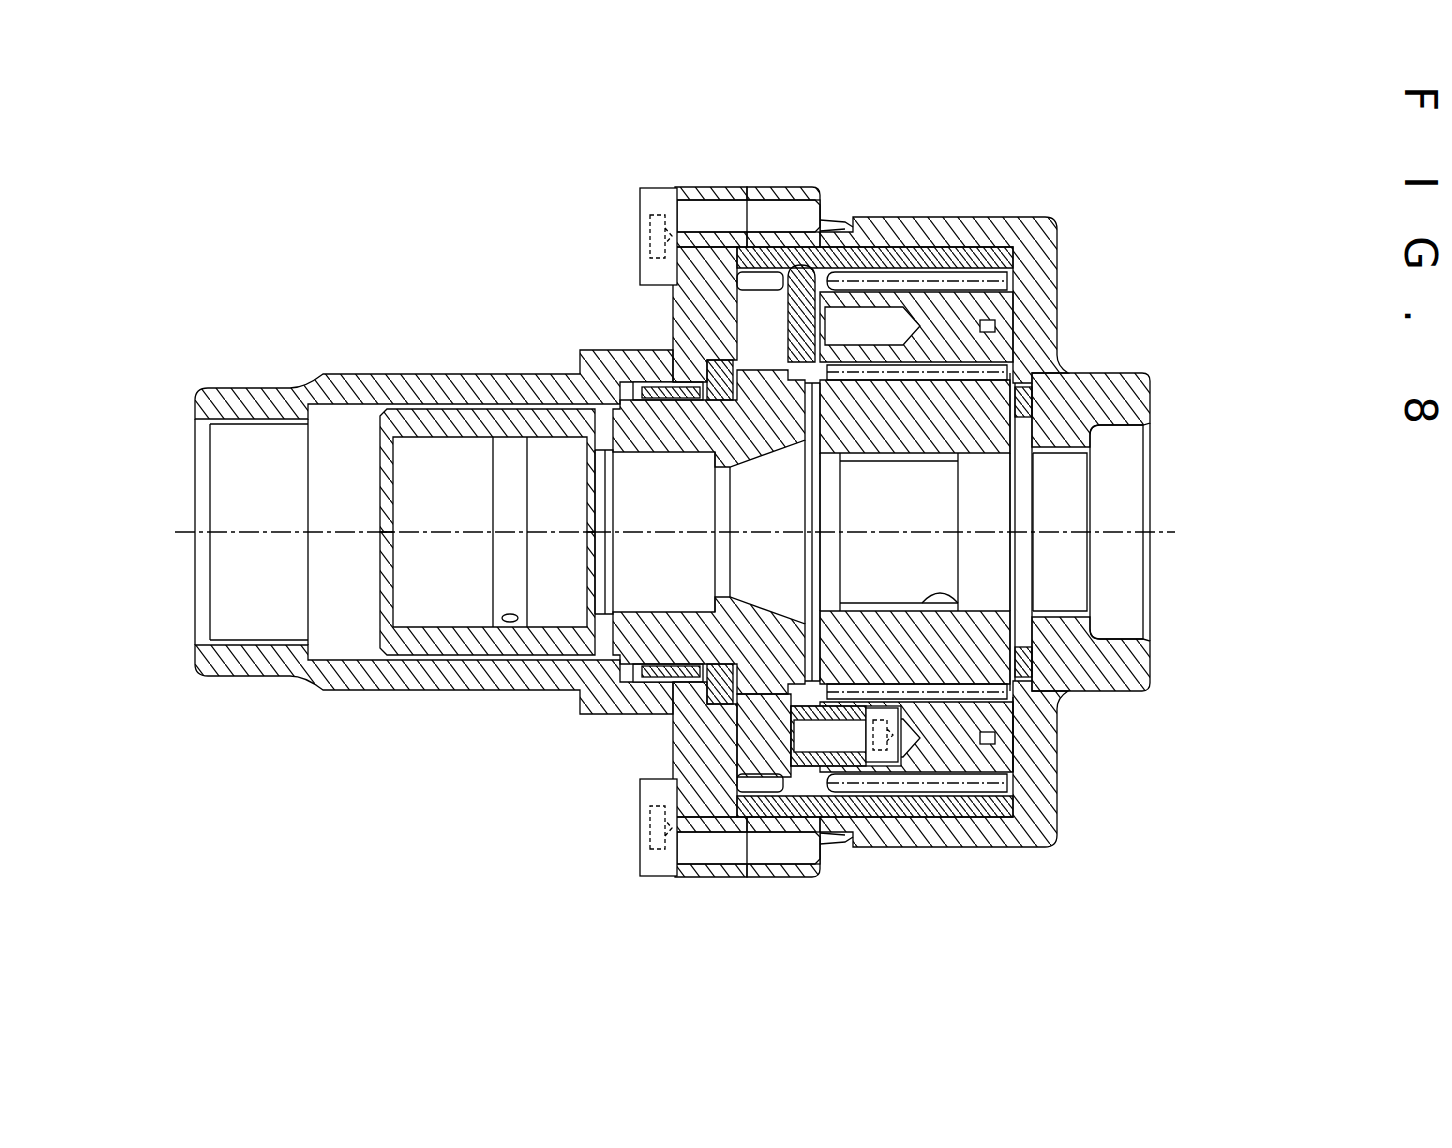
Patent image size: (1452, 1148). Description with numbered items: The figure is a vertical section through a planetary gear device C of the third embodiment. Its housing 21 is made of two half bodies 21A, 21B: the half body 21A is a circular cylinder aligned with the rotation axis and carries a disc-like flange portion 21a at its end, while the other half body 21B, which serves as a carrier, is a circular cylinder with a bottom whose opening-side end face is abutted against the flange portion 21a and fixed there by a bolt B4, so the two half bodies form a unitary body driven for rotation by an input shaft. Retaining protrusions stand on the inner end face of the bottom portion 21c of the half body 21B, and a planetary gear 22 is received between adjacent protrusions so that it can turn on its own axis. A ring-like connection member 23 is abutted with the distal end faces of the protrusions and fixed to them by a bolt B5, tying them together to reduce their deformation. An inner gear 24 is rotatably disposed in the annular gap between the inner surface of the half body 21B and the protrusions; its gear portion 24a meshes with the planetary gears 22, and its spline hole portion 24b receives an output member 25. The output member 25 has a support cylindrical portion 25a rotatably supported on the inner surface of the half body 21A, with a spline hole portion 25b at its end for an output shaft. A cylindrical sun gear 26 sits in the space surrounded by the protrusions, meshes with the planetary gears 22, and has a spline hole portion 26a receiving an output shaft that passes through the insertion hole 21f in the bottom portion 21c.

The housing 21 is at (258, 428).
The half body 21A is at (698, 187).
The half body (carrier) 21B is at (773, 187).
The flange portion 21a is at (695, 303).
The bottom portion 21c is at (1053, 307).
The insertion hole 21f is at (1115, 565).
The planetary gear 22 is at (1052, 278).
The connection member 23 is at (808, 763).
The inner gear 24 is at (913, 257).
The gear portion 24a is at (953, 291).
The spline hole portion 24b is at (762, 292).
The output member 25 is at (763, 747).
The support cylindrical portion 25a is at (555, 643).
The spline hole portion 25b is at (437, 612).
The sun gear 26 is at (953, 693).
The spline hole portion 26a is at (955, 585).
The bolt B4 is at (643, 188).
The bolt B5 is at (882, 752).
The planetary gear device C is at (1070, 186).